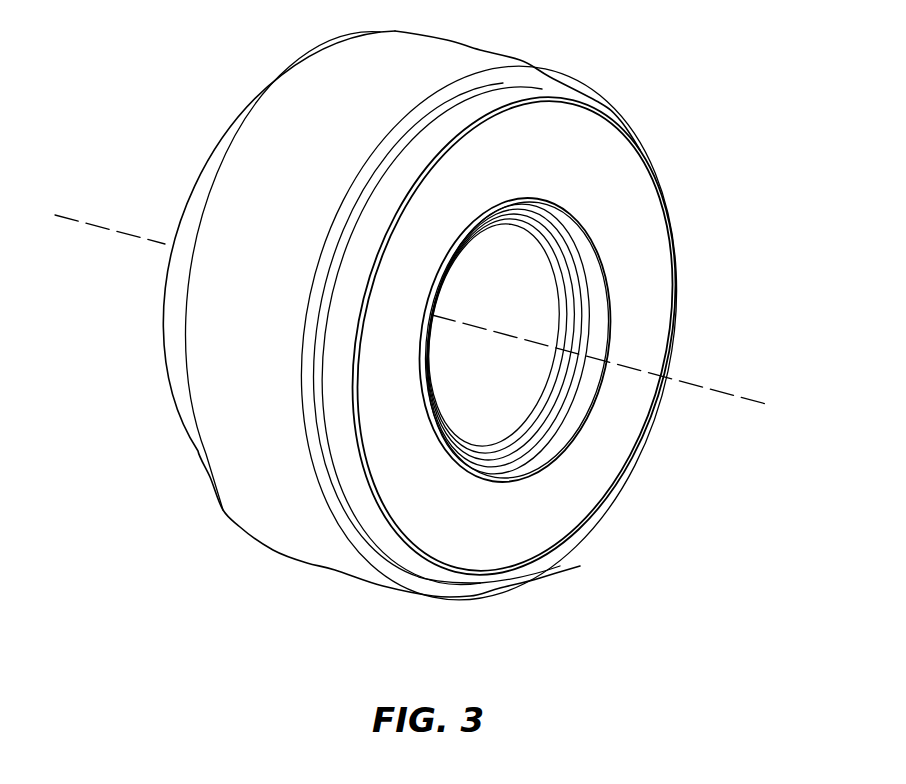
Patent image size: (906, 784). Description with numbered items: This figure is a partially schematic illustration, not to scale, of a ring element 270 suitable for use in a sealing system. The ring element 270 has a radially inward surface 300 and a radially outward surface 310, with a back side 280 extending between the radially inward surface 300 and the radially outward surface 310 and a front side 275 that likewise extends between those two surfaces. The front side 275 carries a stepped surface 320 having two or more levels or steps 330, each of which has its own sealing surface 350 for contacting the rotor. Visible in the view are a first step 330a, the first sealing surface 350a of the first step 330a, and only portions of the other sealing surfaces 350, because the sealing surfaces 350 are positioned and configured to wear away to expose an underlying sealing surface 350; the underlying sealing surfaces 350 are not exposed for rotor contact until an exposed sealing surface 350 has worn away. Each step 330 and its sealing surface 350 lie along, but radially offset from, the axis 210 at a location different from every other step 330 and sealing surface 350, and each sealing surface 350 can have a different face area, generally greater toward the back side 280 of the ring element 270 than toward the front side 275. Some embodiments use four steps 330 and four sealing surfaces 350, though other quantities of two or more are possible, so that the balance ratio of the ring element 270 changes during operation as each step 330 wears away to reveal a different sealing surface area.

The axis 210 is at (708, 388).
The ring element 270 is at (230, 483).
The front side 275 is at (575, 506).
The back side 280 is at (134, 309).
The radially inward surface 300 is at (530, 278).
The radially outward surface 310 is at (218, 398).
The stepped surface 320 is at (612, 440).
The steps 330 is at (505, 441).
The first step 330a is at (400, 480).
The sealing surfaces 350 is at (520, 460).
The first sealing surface 350a is at (490, 527).